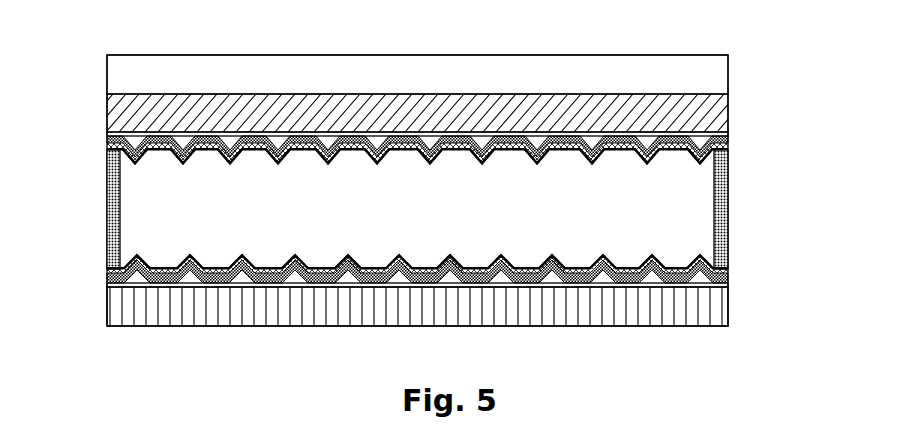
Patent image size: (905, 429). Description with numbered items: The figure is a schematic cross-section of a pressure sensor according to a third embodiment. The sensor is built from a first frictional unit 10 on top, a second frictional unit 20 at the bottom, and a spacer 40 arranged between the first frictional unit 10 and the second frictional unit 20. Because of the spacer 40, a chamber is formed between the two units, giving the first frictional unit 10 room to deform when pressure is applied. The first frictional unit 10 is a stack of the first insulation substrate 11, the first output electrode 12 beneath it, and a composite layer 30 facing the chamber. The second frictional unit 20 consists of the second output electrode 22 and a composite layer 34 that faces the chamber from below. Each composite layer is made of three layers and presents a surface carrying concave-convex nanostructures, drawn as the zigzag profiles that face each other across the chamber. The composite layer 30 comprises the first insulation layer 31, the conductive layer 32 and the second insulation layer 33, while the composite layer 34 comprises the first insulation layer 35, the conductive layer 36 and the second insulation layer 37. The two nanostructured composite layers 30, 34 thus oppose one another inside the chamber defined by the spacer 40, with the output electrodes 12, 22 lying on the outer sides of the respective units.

The first frictional unit 10 is at (424, 76).
The first insulation substrate 11 is at (728, 72).
The first output electrode 12 is at (728, 112).
The second frictional unit 20 is at (438, 299).
The second output electrode 22 is at (728, 305).
The composite layer 30 is at (480, 155).
The first insulation layer 31 is at (728, 137).
The conductive layer 32 is at (728, 145).
The second insulation layer 33 is at (459, 173).
The composite layer 34 is at (480, 278).
The first insulation layer 35 is at (458, 303).
The conductive layer 36 is at (728, 276).
The second insulation layer 37 is at (728, 268).
The spacer 40 is at (97, 208).